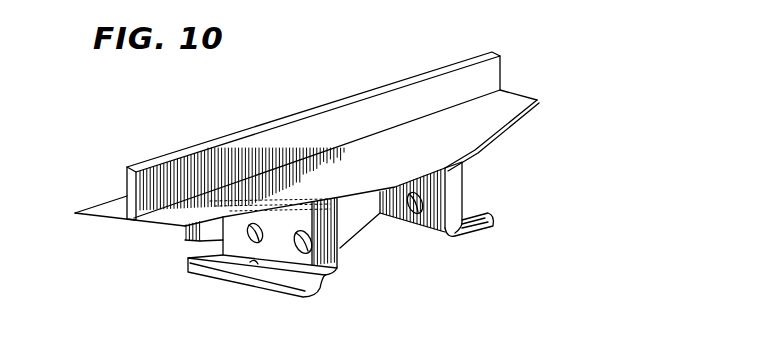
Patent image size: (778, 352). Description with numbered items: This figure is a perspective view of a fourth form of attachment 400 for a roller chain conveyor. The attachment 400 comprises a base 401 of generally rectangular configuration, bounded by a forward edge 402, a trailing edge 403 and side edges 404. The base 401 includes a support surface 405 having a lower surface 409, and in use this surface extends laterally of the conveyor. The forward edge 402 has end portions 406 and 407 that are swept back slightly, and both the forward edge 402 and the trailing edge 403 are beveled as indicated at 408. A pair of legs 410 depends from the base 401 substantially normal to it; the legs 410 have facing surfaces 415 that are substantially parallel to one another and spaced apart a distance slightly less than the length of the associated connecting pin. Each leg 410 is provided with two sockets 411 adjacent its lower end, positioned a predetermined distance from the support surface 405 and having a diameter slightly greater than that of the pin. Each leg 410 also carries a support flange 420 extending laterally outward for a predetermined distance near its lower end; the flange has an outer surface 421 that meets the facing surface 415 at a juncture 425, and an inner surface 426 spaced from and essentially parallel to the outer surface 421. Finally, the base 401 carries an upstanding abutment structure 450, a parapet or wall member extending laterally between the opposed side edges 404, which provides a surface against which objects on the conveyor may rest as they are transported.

The attachment 400 is at (551, 161).
The base 401 is at (507, 100).
The forward edge 402 is at (408, 179).
The trailing edge 403 is at (110, 199).
The side edges 404 is at (537, 99).
The support surface 405 is at (392, 152).
The end portion 406 is at (500, 129).
The end portion 407 is at (303, 204).
The bevel 408 is at (497, 137).
The lower surface 409 is at (520, 120).
The legs 410 is at (360, 250).
The sockets 411 is at (262, 232).
The facing surfaces 415 is at (367, 237).
The support flange 420 is at (277, 292).
The outer surface 421 is at (327, 293).
The juncture 425 is at (353, 272).
The inner surface 426 is at (250, 265).
The upstanding abutment structure 450 is at (503, 53).